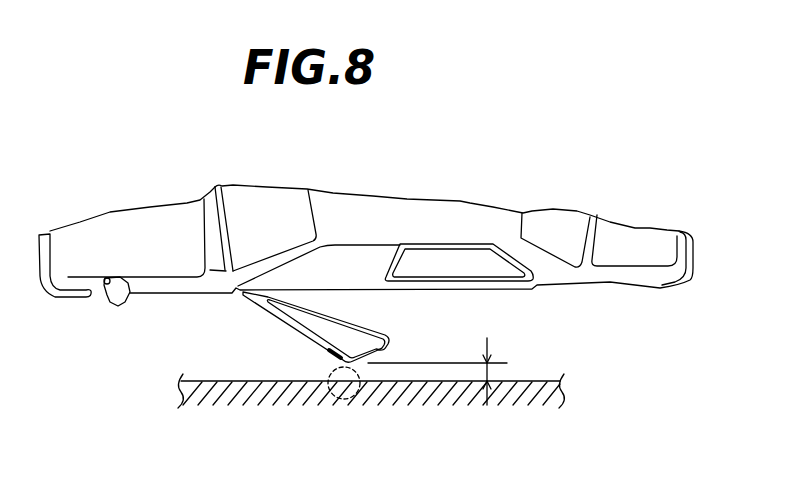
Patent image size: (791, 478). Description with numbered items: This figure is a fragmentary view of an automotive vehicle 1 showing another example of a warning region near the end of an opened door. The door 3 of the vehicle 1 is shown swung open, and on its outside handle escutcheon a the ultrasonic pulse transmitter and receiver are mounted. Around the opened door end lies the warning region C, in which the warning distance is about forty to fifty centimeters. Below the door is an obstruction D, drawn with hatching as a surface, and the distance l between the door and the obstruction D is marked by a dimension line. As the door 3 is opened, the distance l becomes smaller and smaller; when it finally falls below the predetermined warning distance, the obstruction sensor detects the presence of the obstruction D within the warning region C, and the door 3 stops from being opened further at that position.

The vehicle 1 is at (37, 251).
The door 3 is at (262, 303).
The outside handle escutcheon a is at (331, 350).
The warning region C is at (334, 362).
The distance between the door and the obstruction l is at (442, 371).
The obstruction D is at (434, 446).